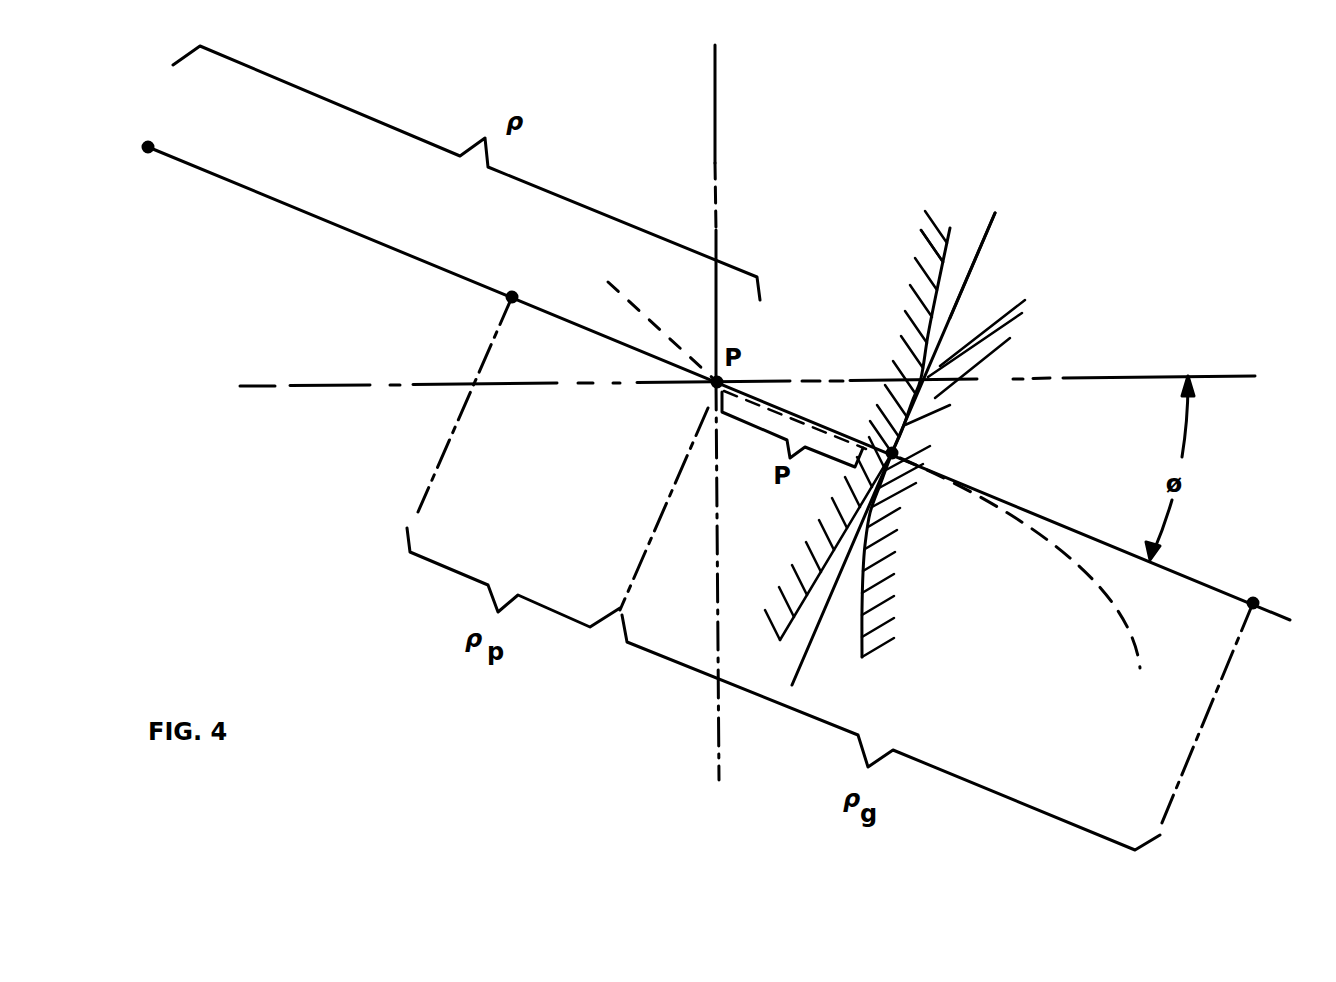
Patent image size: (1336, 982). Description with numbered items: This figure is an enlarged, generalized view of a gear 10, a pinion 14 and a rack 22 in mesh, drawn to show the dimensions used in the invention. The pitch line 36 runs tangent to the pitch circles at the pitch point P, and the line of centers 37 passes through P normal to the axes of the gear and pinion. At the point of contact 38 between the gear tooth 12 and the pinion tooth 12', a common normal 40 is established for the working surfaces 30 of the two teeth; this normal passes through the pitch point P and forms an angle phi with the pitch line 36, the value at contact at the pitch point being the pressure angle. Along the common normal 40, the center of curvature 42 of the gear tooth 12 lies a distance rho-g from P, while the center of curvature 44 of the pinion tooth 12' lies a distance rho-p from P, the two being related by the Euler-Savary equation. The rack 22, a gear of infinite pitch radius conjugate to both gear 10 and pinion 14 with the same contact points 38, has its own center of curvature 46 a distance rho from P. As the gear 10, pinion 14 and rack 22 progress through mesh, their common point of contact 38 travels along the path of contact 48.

The gear 10 is at (887, 630).
The gear tooth 12 is at (919, 470).
The pinion tooth 12' is at (886, 332).
The pinion 14 is at (927, 253).
The rack 22 is at (980, 228).
The working surfaces 30 is at (997, 312).
The pitch line 36 is at (1123, 375).
The line of centers 37 is at (716, 73).
The point of contact 38 is at (895, 450).
The common normal 40 is at (1217, 592).
The center of curvature of gear tooth 42 is at (1256, 606).
The center of curvature of pinion tooth 44 is at (512, 296).
The center of curvature of rack 46 is at (146, 150).
The path of contact 48 is at (610, 283).